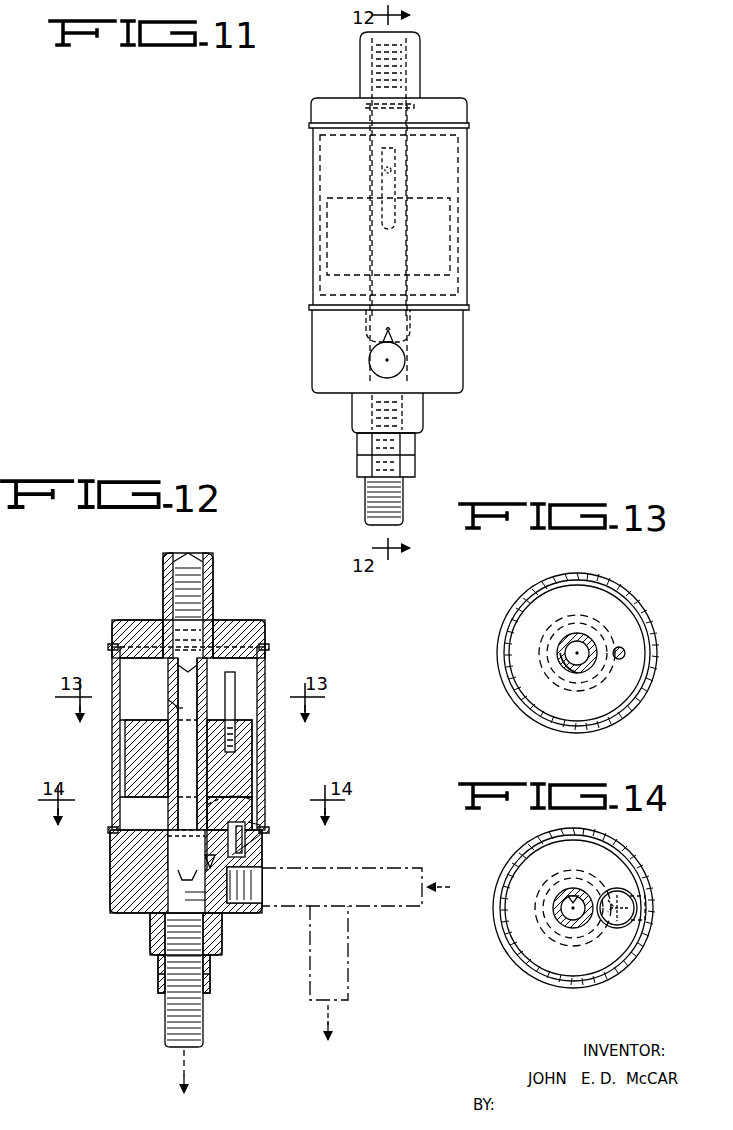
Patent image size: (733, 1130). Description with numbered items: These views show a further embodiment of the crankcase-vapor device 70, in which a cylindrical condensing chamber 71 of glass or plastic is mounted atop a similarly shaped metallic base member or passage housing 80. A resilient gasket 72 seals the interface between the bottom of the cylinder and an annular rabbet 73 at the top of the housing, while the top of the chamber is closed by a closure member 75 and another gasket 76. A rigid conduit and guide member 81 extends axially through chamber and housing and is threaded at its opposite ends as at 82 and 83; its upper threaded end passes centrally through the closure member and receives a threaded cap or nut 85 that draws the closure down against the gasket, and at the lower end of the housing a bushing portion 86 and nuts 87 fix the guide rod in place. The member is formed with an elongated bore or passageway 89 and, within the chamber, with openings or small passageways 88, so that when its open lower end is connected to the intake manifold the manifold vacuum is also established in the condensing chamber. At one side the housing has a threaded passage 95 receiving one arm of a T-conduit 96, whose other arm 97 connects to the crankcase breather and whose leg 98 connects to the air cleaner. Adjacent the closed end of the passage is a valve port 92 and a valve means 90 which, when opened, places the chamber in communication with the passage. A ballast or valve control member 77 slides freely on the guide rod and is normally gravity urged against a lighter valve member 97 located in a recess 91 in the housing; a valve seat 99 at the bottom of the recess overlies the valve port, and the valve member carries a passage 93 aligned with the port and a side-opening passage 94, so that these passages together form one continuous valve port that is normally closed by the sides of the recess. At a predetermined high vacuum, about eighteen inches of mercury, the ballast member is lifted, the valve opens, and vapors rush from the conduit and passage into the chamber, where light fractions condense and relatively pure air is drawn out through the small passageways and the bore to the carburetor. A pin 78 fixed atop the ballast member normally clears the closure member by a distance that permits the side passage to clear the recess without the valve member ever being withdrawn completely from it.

In FIG. 11, the device 70 is at (477, 152).
In FIG. 11, the condensing chamber 71 is at (467, 212).
In FIG. 12, the condensing chamber 71 is at (265, 675).
In FIG. 13, the condensing chamber 71 is at (535, 590).
In FIG. 14, the condensing chamber 71 is at (513, 862).
In FIG. 11, the resilient gasket 72 is at (467, 308).
In FIG. 12, the resilient gasket 72 is at (110, 832).
In FIG. 13, the resilient gasket 72 is at (590, 578).
In FIG. 14, the resilient gasket 72 is at (505, 960).
In FIG. 11, the annular rabbet 73 is at (313, 125).
In FIG. 12, the annular rabbet 73 is at (118, 836).
In FIG. 12, the closure member 75 is at (137, 625).
In FIG. 12, the gasket 76 is at (108, 647).
In FIG. 11, the ballast or valve control member 77 is at (327, 243).
In FIG. 12, the ballast or valve control member 77 is at (140, 745).
In FIG. 13, the ballast or valve control member 77 is at (605, 692).
In FIG. 11, the pin 78 is at (397, 165).
In FIG. 12, the pin 78 is at (230, 700).
In FIG. 13, the pin 78 is at (626, 655).
In FIG. 11, the base member or passage housing 80 is at (465, 360).
In FIG. 12, the base member or passage housing 80 is at (120, 885).
In FIG. 11, the conduit and guide member 81 is at (368, 178).
In FIG. 12, the conduit and guide member 81 is at (205, 680).
In FIG. 13, the conduit and guide member 81 is at (586, 648).
In FIG. 14, the conduit and guide member 81 is at (580, 925).
In FIG. 12, the upper threaded end 82 is at (198, 605).
In FIG. 11, the lower threaded end 83 is at (370, 490).
In FIG. 12, the lower threaded end 83 is at (175, 935).
In FIG. 11, the threaded cap or nut 85 is at (412, 65).
In FIG. 12, the threaded cap or nut 85 is at (213, 562).
In FIG. 11, the bushing portion 86 is at (415, 423).
In FIG. 12, the bushing portion 86 is at (210, 945).
In FIG. 11, the nuts 87 is at (357, 450).
In FIG. 12, the nuts 87 is at (210, 975).
In FIG. 12, the openings or small passageways 88 is at (170, 695).
In FIG. 13, the openings or small passageways 88 is at (562, 662).
In FIG. 12, the elongated bore or passageway 89 is at (181, 710).
In FIG. 13, the elongated bore or passageway 89 is at (572, 645).
In FIG. 14, the elongated bore or passageway 89 is at (573, 897).
In FIG. 12, the valve means 90 is at (274, 856).
In FIG. 12, the recess 91 is at (250, 843).
In FIG. 14, the recess 91 is at (600, 900).
In FIG. 11, the valve port 92 is at (390, 350).
In FIG. 12, the valve port 92 is at (188, 885).
In FIG. 12, the passage 93 is at (186, 819).
In FIG. 12, the passage 94 is at (240, 828).
In FIG. 11, the passage 95 is at (372, 363).
In FIG. 12, the passage 95 is at (250, 890).
In FIG. 14, the passage 95 is at (648, 893).
In FIG. 12, the T-conduit 96 is at (348, 863).
In FIG. 11, the valve member 97 is at (380, 285).
In FIG. 12, the valve member 97 is at (232, 800).
In FIG. 14, the valve member 97 is at (620, 918).
In FIG. 12, the branch or leg 98 is at (340, 985).
In FIG. 12, the valve seat 99 is at (192, 859).